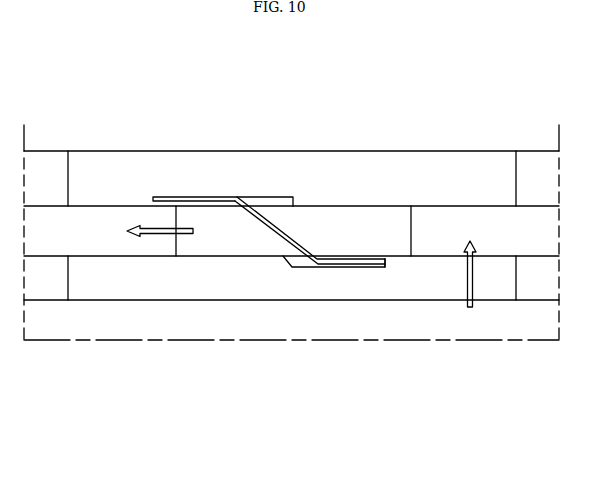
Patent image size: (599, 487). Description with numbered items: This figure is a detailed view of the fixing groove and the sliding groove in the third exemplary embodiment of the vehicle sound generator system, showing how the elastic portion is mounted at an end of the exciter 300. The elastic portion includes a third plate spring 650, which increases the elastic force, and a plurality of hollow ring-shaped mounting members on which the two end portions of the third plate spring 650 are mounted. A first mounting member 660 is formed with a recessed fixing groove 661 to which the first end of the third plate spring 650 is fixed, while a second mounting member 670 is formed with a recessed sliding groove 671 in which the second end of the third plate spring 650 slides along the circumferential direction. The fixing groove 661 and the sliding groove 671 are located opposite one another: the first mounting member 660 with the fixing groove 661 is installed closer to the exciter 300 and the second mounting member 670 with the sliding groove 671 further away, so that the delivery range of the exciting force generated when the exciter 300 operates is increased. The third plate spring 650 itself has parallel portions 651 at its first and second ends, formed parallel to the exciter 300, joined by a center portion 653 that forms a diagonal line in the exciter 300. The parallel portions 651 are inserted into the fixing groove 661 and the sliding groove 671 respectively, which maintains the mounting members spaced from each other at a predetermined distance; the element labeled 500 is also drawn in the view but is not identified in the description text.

The exciter 300 is at (490, 347).
The intermediate layer 500 is at (343, 227).
The third plate spring 650 is at (295, 228).
The parallel portion 651 is at (350, 265).
The center portion 653 is at (262, 197).
The first mounting member 660 is at (377, 287).
The fixing groove 661 is at (375, 259).
The second mounting member 670 is at (442, 158).
The sliding groove 671 is at (110, 198).